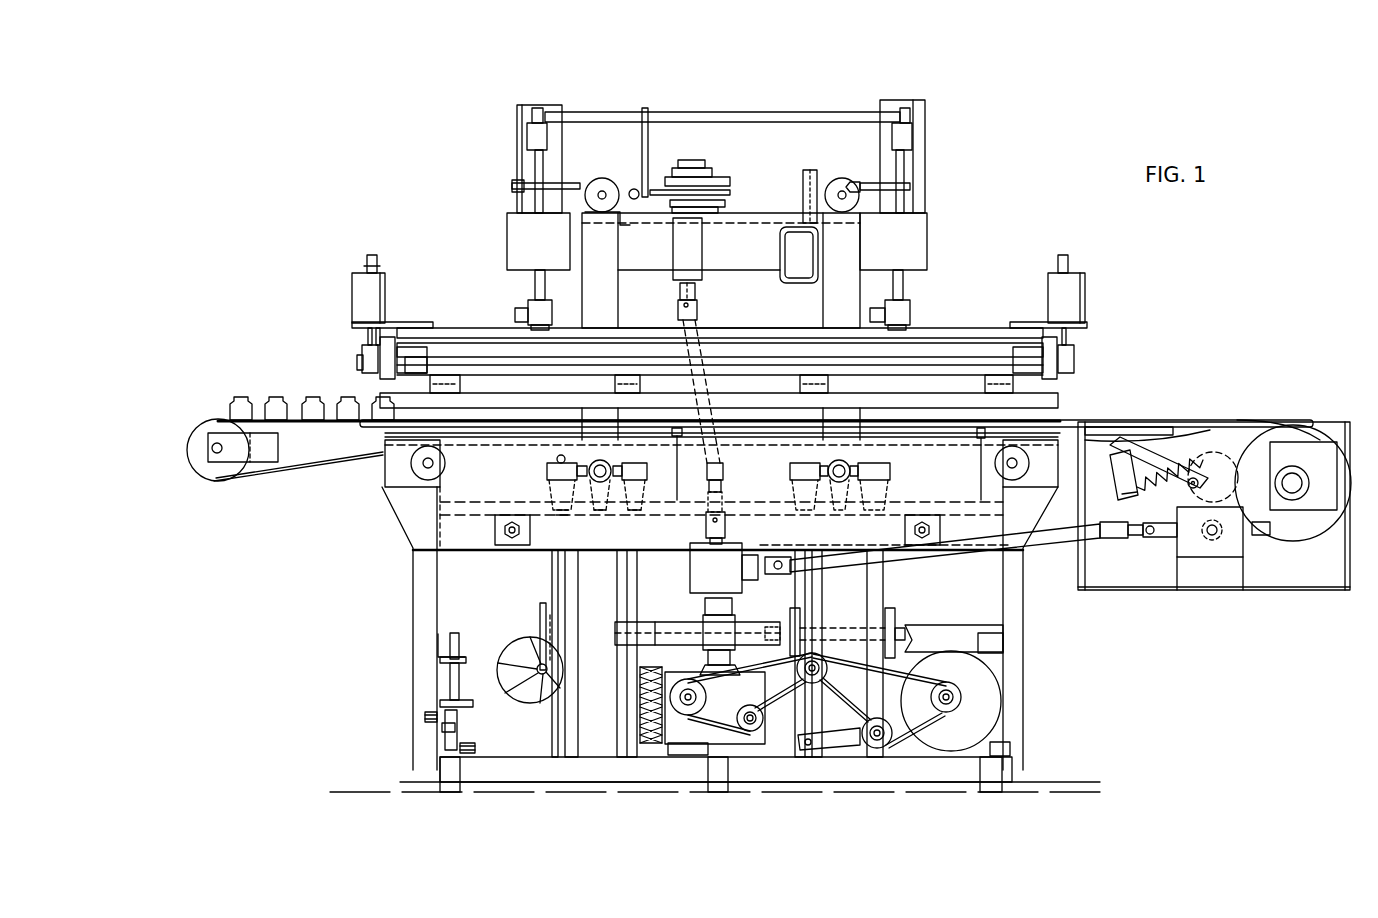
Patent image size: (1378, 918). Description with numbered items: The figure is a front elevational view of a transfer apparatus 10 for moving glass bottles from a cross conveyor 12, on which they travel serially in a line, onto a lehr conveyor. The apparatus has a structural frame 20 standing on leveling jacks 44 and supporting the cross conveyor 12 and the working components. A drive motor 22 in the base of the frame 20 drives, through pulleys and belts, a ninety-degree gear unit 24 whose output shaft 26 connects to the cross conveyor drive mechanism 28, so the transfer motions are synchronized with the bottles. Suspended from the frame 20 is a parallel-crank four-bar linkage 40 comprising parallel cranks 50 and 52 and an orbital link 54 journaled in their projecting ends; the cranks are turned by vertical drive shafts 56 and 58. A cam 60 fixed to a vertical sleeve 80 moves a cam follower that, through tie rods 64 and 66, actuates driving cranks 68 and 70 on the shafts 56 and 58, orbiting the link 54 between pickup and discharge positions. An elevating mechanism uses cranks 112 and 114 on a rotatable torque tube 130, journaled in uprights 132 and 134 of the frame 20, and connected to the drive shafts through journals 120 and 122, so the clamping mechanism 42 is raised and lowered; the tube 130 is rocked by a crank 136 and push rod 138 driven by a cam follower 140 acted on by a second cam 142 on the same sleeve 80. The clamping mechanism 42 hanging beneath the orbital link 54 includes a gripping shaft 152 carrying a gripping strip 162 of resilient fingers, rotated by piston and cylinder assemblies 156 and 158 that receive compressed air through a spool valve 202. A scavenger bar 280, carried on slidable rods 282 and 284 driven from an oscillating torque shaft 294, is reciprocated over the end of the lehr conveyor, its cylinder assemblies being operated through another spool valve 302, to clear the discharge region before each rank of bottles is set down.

The transfer apparatus 10 is at (288, 243).
The cross conveyor 12 is at (1192, 420).
The structural frame 20 is at (408, 618).
The drive motor 22 is at (980, 708).
The 90° gear unit 24 is at (728, 580).
The output shaft 26 is at (1057, 540).
The cross conveyor drive mechanism 28 is at (1148, 551).
The parallel-crank four-bar linkage 40 is at (719, 343).
The clamping mechanism 42 is at (344, 317).
The leveling jacks 44 is at (447, 778).
The parallel crank 50 is at (545, 312).
The parallel crank 52 is at (905, 315).
The orbital link 54 is at (485, 308).
The drive shaft 56 is at (535, 277).
The drive shaft 58 is at (903, 282).
The cam 60 is at (692, 178).
The tie rod 64 is at (570, 183).
The tie rod 66 is at (862, 184).
The driving crank 68 is at (520, 190).
The driving crank 70 is at (912, 189).
The vertical sleeve 80 is at (700, 188).
The crank 112 is at (546, 108).
The crank 114 is at (905, 110).
The journal 120 is at (535, 145).
The journal 122 is at (912, 140).
The torque tube 130 is at (725, 112).
The upright 132 is at (517, 128).
The upright 134 is at (893, 100).
The crank 136 is at (646, 130).
The push rod 138 is at (636, 190).
The cam follower 140 is at (730, 194).
The cam 142 is at (712, 210).
The gripping shaft 152 is at (364, 368).
The piston and cylinder assembly 156 is at (362, 291).
The piston and cylinder assembly 158 is at (1080, 300).
The gripping strip 162 is at (418, 408).
The spool valve 202 is at (602, 205).
The scavenger bar 280 is at (1020, 430).
The rod 282 is at (978, 438).
The rod 284 is at (688, 432).
The torque shaft 294 is at (540, 505).
The spool valve 302 is at (842, 205).